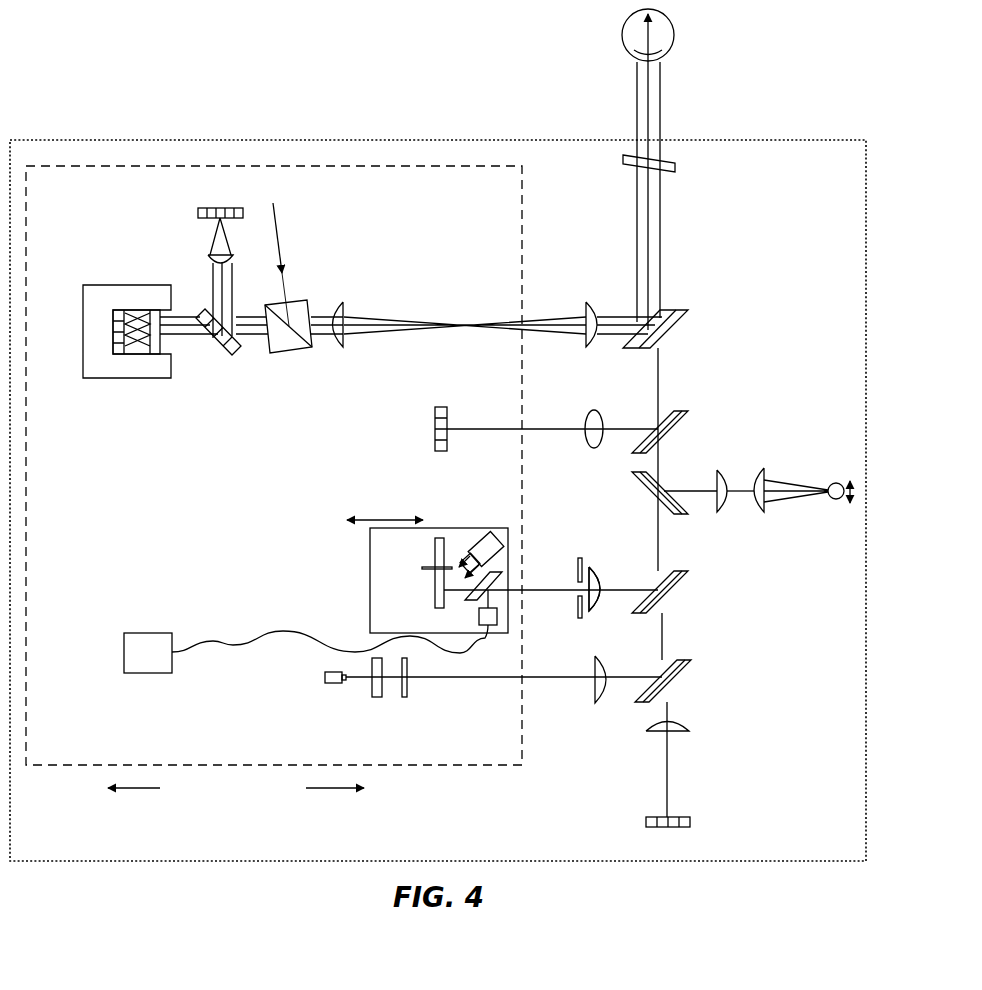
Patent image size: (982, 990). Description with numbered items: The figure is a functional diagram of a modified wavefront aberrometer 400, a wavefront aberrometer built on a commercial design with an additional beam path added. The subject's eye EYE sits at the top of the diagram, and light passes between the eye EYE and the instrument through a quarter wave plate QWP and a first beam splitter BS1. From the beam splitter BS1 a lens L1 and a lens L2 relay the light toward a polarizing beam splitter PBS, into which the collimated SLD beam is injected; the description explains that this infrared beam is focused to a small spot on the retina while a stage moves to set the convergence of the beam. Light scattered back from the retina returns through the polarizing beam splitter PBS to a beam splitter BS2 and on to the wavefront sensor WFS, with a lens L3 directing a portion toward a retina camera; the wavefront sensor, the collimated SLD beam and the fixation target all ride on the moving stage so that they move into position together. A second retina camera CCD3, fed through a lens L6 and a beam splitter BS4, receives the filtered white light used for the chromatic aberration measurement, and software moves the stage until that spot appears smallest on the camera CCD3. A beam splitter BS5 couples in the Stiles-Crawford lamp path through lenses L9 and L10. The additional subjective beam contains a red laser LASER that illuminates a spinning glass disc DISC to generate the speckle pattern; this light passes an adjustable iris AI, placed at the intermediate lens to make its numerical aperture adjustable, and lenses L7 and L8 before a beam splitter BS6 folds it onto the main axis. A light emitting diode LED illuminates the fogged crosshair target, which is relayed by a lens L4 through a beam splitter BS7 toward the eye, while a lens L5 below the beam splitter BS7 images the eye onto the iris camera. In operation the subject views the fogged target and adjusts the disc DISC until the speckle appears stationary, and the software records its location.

The modified wavefront aberrometer 400 is at (116, 107).
The eye EYE is at (666, 40).
The quarter wave plate QWP is at (676, 168).
The beam splitter BS1 is at (666, 311).
The lens L1 is at (595, 339).
The lens L2 is at (337, 339).
The polarizing beam splitter PBS is at (291, 338).
The beam splitter BS2 is at (218, 342).
The lens L3 is at (205, 250).
The wavefront sensor WFS is at (127, 345).
The second retina camera CCD3 is at (411, 429).
The lens L6 is at (599, 416).
The beam splitter BS4 is at (671, 420).
The beam splitter BS5 is at (634, 490).
The lens L9 is at (721, 506).
The lens L10 is at (766, 505).
The aperture AI is at (562, 583).
The lens L7 is at (598, 568).
The lens L8 is at (599, 604).
The beam splitter BS6 is at (671, 580).
The lens L4 is at (599, 699).
The beam splitter BS7 is at (675, 668).
The lens L5 is at (684, 732).
The light emitting diode LED is at (334, 706).
The laser LASER is at (488, 534).
The disc DISC is at (418, 573).